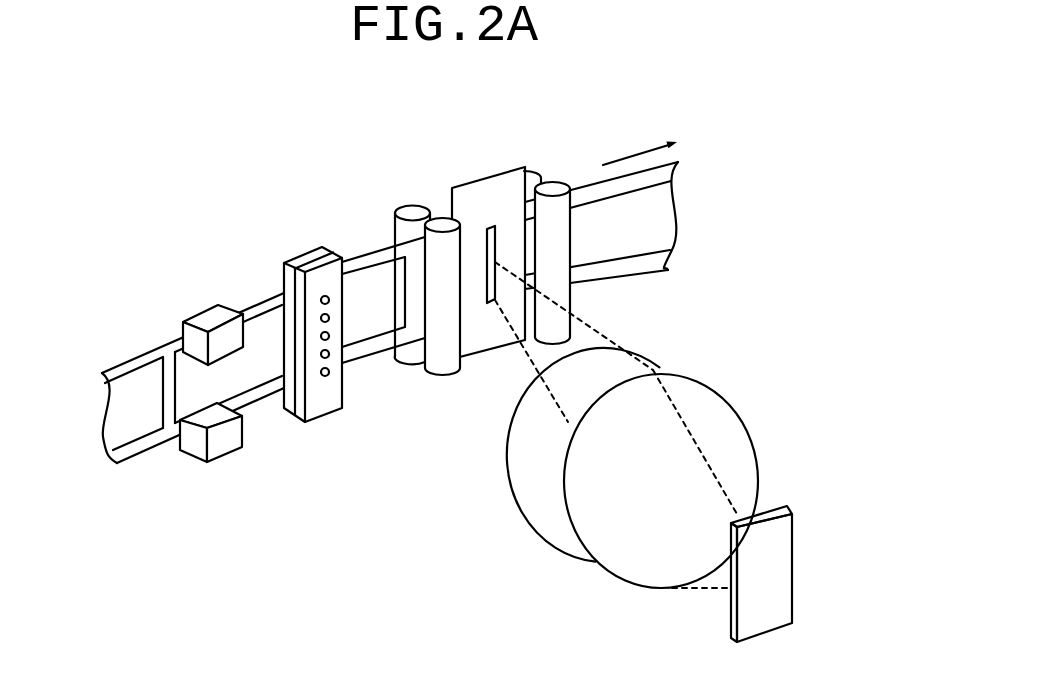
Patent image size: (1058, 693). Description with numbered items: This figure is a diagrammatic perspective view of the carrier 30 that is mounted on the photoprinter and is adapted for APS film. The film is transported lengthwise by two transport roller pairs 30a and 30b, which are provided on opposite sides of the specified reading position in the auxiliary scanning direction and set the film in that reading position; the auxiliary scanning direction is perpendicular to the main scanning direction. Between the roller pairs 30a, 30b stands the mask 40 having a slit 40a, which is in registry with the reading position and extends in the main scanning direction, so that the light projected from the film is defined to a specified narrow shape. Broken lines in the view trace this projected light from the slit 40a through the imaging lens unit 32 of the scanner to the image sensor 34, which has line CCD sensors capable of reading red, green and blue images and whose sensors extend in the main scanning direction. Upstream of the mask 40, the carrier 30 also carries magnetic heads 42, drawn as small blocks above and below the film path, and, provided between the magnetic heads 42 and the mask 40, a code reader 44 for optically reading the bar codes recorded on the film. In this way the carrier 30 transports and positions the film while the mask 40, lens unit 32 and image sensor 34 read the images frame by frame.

The carrier 30 is at (420, 166).
The transport roller pair 30a is at (438, 362).
The transport roller pair 30b is at (552, 267).
The imaging lens unit 32 is at (708, 412).
The image sensor 34 is at (775, 566).
The mask 40 is at (485, 340).
The slit 40a is at (495, 226).
The magnetic heads 42 is at (207, 321).
The code reader 44 is at (303, 262).